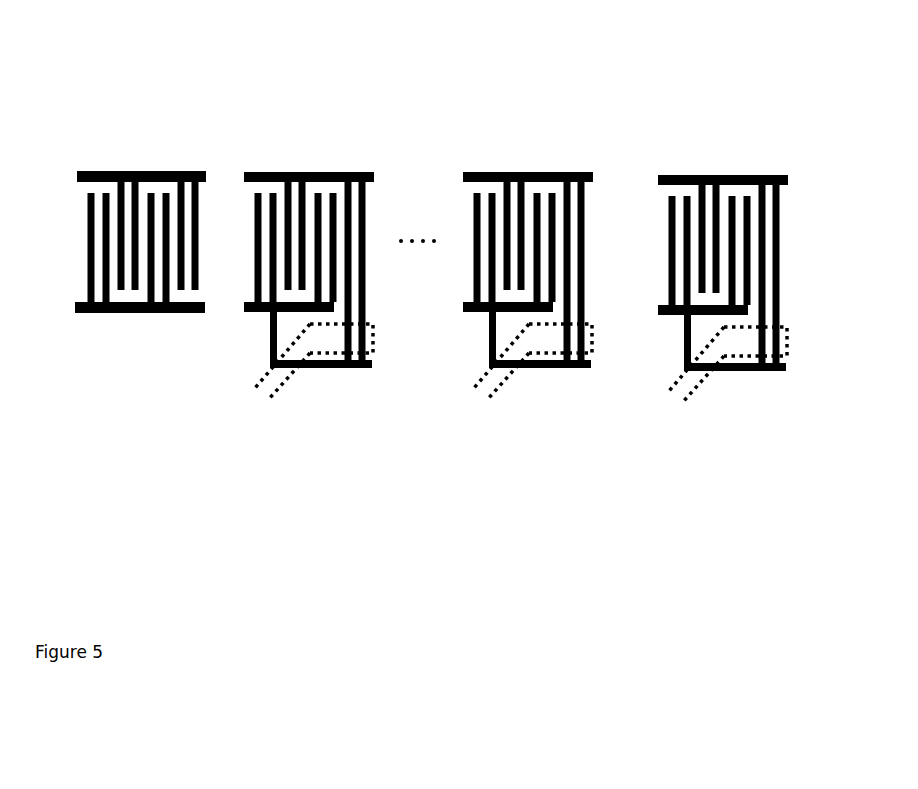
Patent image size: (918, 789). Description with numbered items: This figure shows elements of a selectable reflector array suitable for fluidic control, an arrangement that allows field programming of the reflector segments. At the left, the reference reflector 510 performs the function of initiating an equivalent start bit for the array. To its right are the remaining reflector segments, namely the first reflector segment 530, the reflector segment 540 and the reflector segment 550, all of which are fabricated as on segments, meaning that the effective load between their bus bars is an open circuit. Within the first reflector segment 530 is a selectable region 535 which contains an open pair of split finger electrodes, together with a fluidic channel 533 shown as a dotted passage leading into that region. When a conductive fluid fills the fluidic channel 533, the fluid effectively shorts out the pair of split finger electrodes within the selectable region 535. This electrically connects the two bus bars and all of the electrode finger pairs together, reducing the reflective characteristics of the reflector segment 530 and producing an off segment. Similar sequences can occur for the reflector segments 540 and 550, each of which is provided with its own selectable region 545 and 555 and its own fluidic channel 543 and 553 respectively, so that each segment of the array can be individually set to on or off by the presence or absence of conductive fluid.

The reference reflector 510 is at (142, 333).
The first reflector segment 530 is at (261, 158).
The fluidic channel 533 is at (267, 413).
The selectable region 535 is at (383, 347).
The reflector segment 540 is at (483, 162).
The fluidic channel 543 is at (483, 415).
The selectable region 545 is at (602, 355).
The reflector segment 550 is at (682, 163).
The fluidic channel 553 is at (683, 422).
The selectable region 555 is at (797, 358).